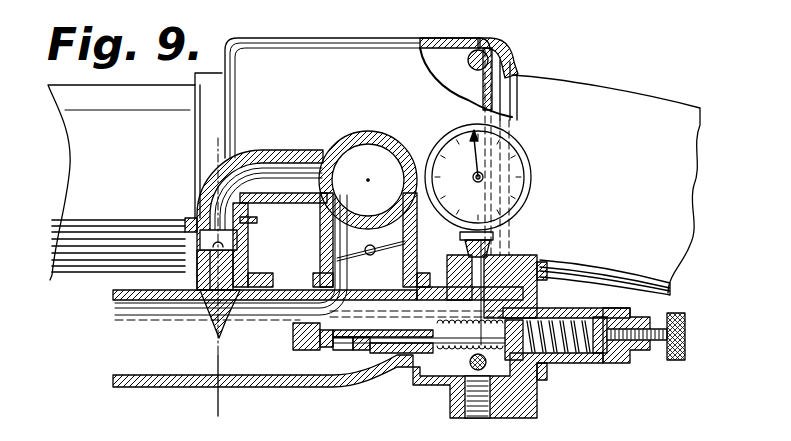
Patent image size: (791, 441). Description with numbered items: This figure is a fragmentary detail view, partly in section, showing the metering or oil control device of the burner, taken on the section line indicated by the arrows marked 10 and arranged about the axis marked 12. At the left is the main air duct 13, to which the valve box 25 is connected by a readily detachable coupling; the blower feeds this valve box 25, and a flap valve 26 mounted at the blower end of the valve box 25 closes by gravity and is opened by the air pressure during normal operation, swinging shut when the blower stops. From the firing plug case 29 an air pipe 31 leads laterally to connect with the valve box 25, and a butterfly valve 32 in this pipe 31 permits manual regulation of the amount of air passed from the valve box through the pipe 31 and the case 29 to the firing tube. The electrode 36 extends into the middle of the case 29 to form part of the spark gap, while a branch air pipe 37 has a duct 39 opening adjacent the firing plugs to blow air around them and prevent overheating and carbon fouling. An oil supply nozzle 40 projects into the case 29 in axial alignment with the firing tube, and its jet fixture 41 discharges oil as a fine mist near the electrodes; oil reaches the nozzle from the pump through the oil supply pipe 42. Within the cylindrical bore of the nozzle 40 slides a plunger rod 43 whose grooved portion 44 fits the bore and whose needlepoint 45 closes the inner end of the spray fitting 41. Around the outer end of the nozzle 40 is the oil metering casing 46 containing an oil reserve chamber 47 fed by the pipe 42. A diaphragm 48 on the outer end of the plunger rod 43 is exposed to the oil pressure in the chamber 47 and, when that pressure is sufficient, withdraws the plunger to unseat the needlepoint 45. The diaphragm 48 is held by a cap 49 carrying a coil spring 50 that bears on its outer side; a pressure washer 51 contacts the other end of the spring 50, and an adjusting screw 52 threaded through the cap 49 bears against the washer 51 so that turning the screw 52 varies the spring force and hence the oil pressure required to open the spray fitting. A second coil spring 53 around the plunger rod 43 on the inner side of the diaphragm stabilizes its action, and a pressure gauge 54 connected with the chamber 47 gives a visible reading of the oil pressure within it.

The figure reference (section line 9—9 of Fig. 10) 10 is at (492, 43).
The center line / axis 12 is at (222, 137).
The main air duct 13 is at (142, 167).
The valve box 25 is at (329, 60).
The flap valve 26 is at (513, 74).
The firing plug case 29 is at (283, 357).
The air pipe 31 is at (367, 126).
The butterfly valve 32 is at (371, 258).
The electrode 36 is at (217, 314).
The branch air pipe 37 is at (268, 150).
The duct 39 is at (250, 244).
The oil supply nozzle 40 is at (357, 352).
The jet fixture 41 is at (293, 338).
The oil supply pipe 42 is at (468, 420).
The plunger rod 43 is at (437, 352).
The grooved portion 44 is at (395, 354).
The needlepoint 45 is at (332, 350).
The oil metering casing 46 is at (540, 398).
The oil reserve chamber 47 is at (441, 290).
The diaphragm 48 is at (550, 272).
The cap 49 is at (620, 363).
The coil spring 50 is at (549, 318).
The pressure washer 51 is at (600, 318).
The adjusting screw 52 is at (686, 336).
The coil spring 53 is at (470, 369).
The pressure gauge 54 is at (596, 200).